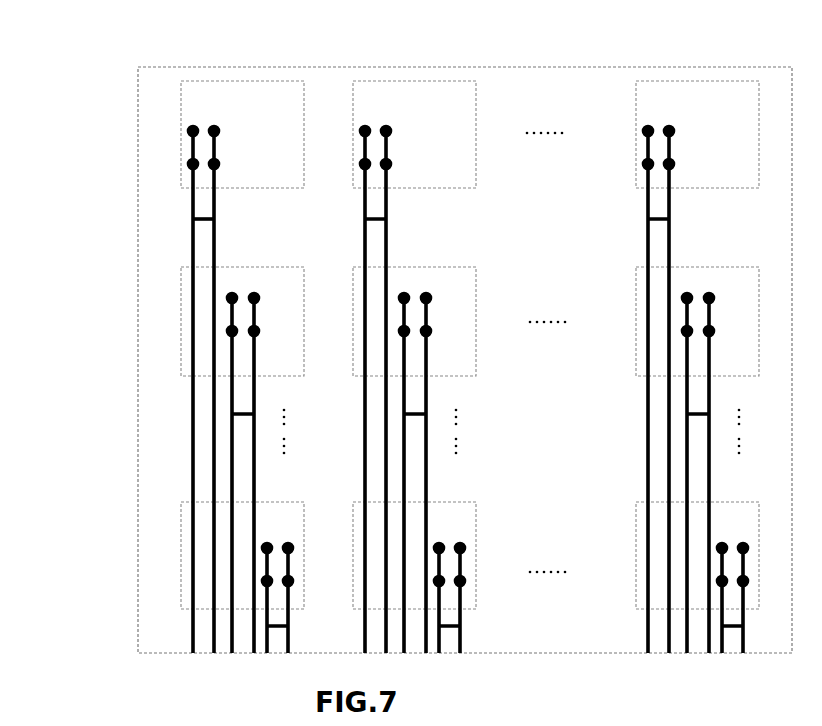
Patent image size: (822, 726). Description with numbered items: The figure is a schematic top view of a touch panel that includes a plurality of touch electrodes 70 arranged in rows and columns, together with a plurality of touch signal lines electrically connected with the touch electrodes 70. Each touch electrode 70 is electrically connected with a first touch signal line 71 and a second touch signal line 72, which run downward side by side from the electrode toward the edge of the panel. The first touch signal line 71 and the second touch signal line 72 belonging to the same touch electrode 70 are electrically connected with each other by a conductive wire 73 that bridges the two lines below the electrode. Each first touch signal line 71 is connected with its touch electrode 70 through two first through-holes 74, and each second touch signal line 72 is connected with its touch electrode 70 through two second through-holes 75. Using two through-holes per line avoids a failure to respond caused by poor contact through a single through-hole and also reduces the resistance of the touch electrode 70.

The touch electrode 70 is at (243, 80).
The first touch signal line 71 is at (192, 200).
The second touch signal line 72 is at (212, 234).
The conductive wire 73 is at (192, 216).
The first through-holes 74 is at (191, 164).
The second through-holes 75 is at (216, 164).